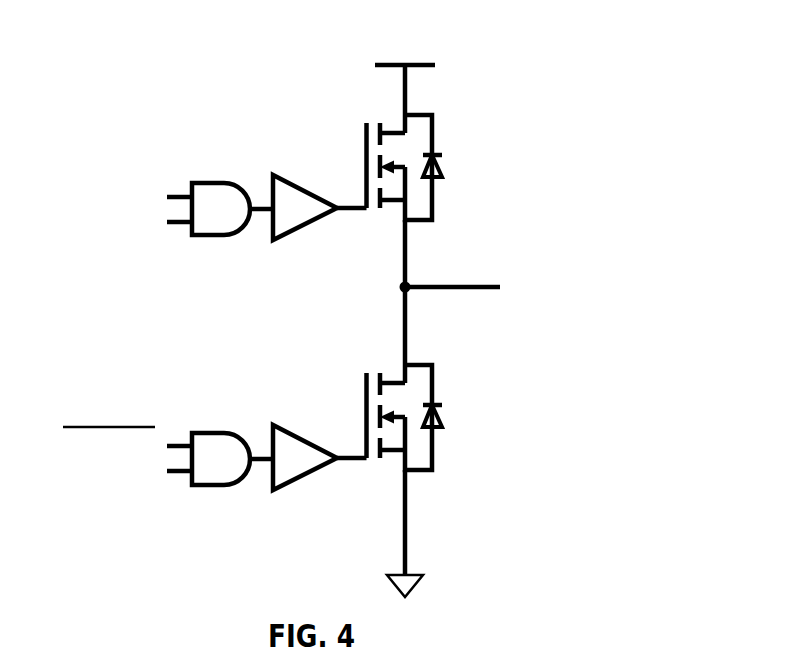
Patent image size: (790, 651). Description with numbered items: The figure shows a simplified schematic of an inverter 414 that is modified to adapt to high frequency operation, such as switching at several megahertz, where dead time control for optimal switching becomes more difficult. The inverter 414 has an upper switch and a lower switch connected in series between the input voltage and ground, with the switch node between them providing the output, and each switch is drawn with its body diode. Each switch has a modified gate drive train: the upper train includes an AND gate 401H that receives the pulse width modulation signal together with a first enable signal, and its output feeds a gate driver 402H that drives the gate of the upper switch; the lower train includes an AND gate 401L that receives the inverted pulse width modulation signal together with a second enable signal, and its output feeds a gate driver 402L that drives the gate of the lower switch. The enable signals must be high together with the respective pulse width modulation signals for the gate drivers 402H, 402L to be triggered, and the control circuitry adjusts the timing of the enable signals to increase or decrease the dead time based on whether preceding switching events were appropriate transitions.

The inverter 414 is at (568, 70).
The AND gate 401H is at (222, 236).
The gate driver 402H is at (285, 174).
The AND gate 401L is at (213, 486).
The gate driver 402L is at (273, 424).